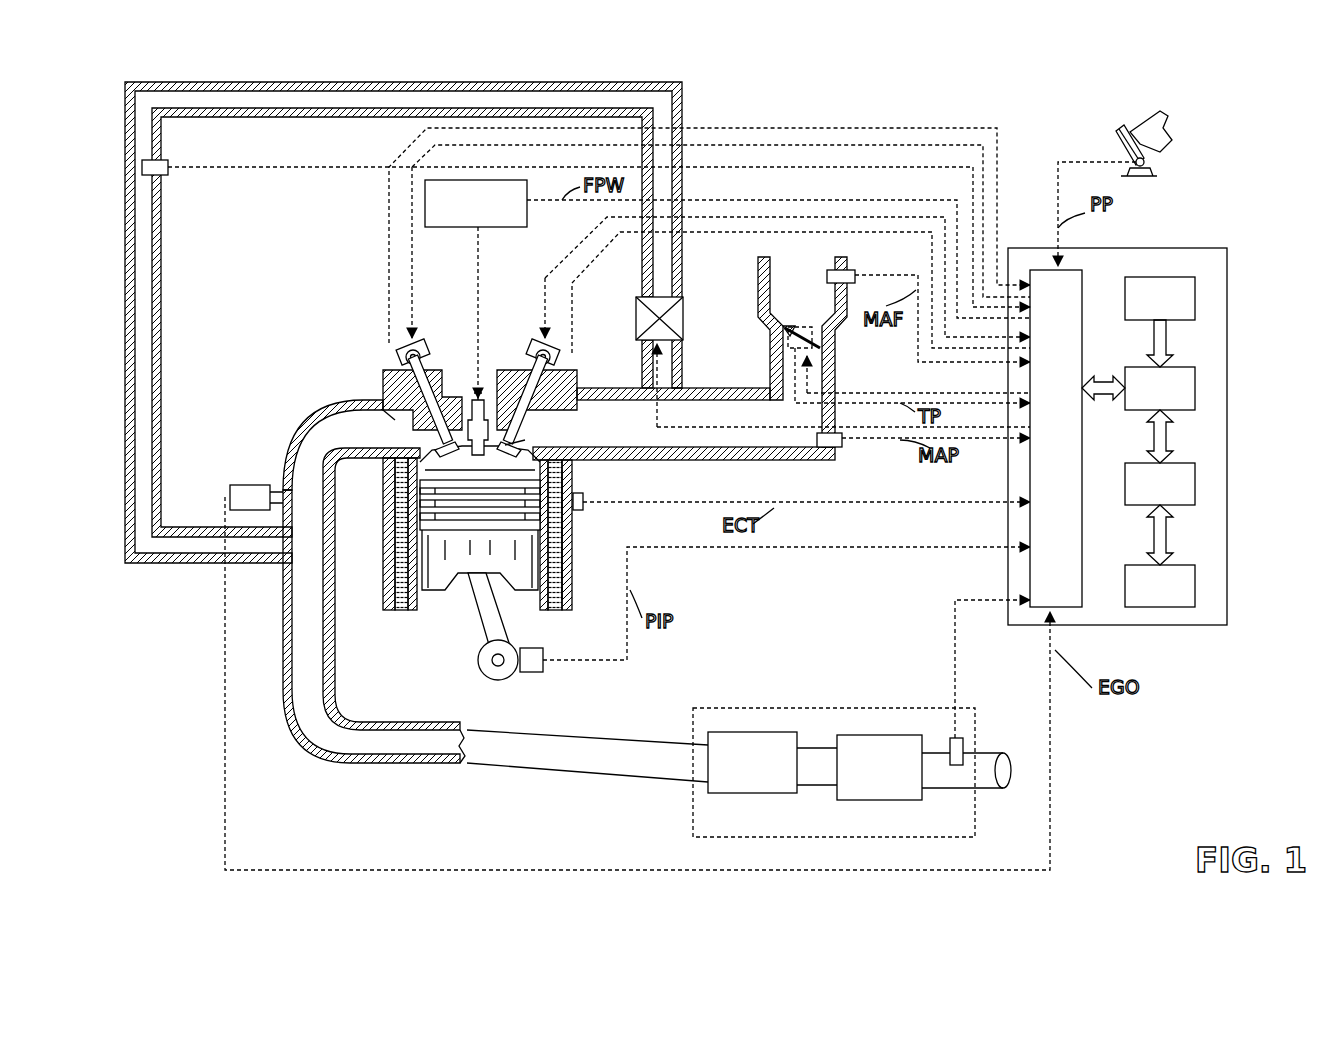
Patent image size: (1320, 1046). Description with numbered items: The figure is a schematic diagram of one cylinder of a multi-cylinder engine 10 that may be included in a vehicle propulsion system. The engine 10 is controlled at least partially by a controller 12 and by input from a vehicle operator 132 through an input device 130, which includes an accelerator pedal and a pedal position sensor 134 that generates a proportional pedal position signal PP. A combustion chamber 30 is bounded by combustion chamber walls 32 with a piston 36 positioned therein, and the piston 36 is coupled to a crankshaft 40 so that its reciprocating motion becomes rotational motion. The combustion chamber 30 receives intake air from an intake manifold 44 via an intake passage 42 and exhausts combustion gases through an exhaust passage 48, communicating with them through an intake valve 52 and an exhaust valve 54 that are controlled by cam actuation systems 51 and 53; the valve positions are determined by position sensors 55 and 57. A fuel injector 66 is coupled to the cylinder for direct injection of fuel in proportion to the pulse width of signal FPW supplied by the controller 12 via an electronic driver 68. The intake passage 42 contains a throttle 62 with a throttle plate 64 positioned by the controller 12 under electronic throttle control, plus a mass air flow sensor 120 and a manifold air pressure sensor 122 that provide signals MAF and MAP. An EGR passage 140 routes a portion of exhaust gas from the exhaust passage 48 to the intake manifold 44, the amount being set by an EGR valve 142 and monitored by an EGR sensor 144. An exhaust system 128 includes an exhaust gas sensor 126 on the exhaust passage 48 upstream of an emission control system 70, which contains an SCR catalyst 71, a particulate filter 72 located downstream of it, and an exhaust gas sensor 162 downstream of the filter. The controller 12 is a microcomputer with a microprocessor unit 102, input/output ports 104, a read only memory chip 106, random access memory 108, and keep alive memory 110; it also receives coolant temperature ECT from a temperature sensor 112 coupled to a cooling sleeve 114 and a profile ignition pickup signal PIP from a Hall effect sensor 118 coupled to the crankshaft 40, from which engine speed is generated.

The engine 10 is at (326, 330).
The controller 12 is at (1164, 423).
The combustion chamber 30 is at (452, 468).
The combustion chamber walls 32 is at (421, 600).
The piston 36 is at (462, 560).
The crankshaft 40 is at (486, 680).
The intake passage 42 is at (802, 352).
The intake manifold 44 is at (684, 439).
The exhaust passage 48 is at (371, 565).
The cam actuation system 51 is at (538, 345).
The intake valve 52 is at (532, 440).
The cam actuation system 53 is at (418, 345).
The exhaust valve 54 is at (396, 422).
The position sensor 55 is at (553, 358).
The position sensor 57 is at (400, 362).
The throttle 62 is at (826, 340).
The throttle plate 64 is at (777, 334).
The fuel injector 66 is at (483, 397).
The electronic driver 68 is at (727, 289).
The emission control system 70 is at (852, 753).
The SCR catalyst 71 is at (752, 762).
The particulate filter 72 is at (879, 767).
The microprocessor unit 102 is at (1197, 387).
The input/output ports 104 is at (1085, 275).
The read only memory chip 106 is at (1197, 297).
The random access memory 108 is at (1197, 483).
The keep alive memory 110 is at (1197, 583).
The temperature sensor 112 is at (584, 496).
The cooling sleeve 114 is at (565, 572).
The Hall effect sensor 118 is at (527, 672).
The mass air flow sensor 120 is at (849, 270).
The manifold air pressure sensor 122 is at (838, 447).
The exhaust gas sensor 126 is at (229, 490).
The exhaust system 128 is at (322, 762).
The input device 130 is at (1175, 179).
The vehicle operator 132 is at (1174, 126).
The pedal position sensor 134 is at (1150, 162).
The EGR passage 140 is at (390, 86).
The EGR valve 142 is at (678, 312).
The EGR sensor 144 is at (165, 176).
The exhaust gas sensor 162 is at (963, 738).